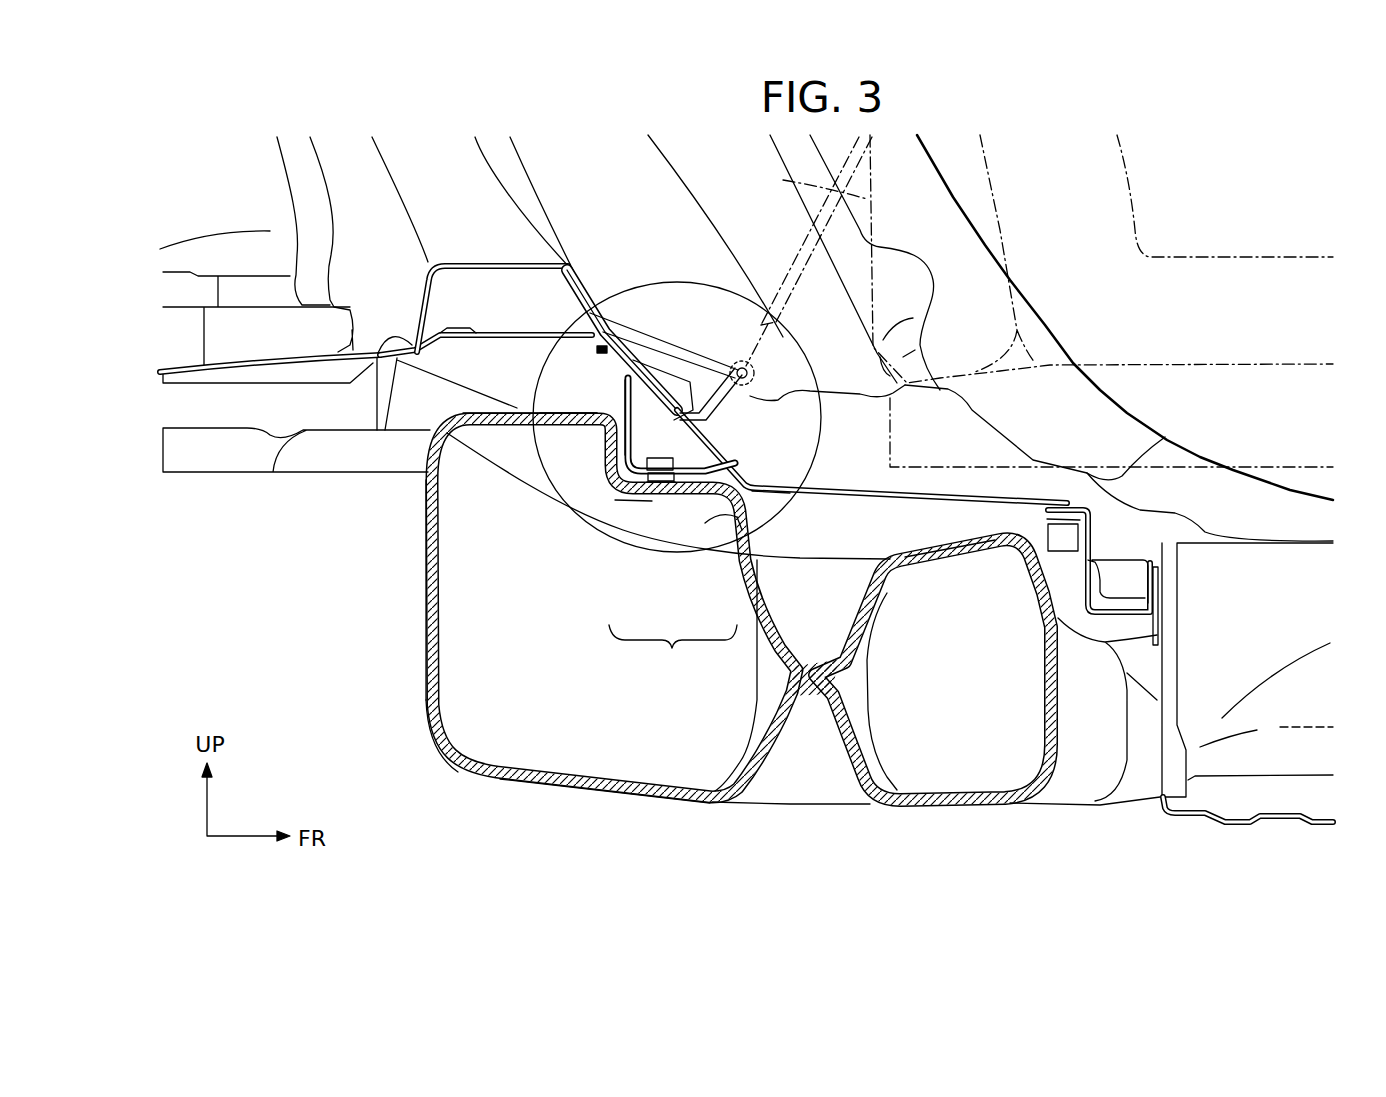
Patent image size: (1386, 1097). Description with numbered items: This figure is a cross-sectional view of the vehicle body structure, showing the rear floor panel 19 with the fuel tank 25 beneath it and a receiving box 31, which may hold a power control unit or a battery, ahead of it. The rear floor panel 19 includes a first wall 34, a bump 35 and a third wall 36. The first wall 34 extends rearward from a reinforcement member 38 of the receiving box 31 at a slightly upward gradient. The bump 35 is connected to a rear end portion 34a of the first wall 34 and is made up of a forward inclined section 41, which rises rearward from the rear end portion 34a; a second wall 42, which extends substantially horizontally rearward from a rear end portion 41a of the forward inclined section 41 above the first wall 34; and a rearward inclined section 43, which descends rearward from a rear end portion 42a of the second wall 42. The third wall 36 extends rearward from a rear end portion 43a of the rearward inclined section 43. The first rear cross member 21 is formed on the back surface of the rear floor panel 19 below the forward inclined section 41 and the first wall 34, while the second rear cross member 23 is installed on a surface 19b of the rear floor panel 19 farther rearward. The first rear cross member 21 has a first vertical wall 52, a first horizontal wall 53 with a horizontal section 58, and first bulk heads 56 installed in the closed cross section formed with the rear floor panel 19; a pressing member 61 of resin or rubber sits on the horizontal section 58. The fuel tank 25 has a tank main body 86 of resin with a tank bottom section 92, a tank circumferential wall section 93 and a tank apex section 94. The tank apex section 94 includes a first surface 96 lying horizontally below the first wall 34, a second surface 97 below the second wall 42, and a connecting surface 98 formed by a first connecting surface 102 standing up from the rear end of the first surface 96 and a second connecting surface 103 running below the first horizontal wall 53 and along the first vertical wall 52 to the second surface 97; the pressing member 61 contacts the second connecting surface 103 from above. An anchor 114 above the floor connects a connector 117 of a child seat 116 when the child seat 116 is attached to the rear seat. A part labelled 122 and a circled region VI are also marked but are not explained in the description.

The rear floor panel 19 is at (984, 484).
The surface of the rear floor panel 19b is at (1040, 498).
The first rear cross member 21 is at (600, 438).
The second rear cross member 23 is at (465, 263).
The fuel tank 25 is at (399, 606).
The receiving box 31 is at (1252, 618).
The first wall 34 is at (840, 485).
The rear end portion of the first wall 34a is at (752, 484).
The bump 35 is at (545, 321).
The third wall 36 is at (262, 353).
The reinforcement member 38 is at (1077, 500).
The forward inclined section 41 is at (697, 412).
The rear end portion of the forward inclined section 41a is at (604, 330).
The second wall 42 is at (510, 331).
The rear end portion of the second wall 42a is at (450, 328).
The rearward inclined section 43 is at (427, 347).
The rear end portion of the rearward inclined section 43a is at (373, 432).
The first vertical wall 52 is at (623, 392).
The first horizontal wall 53 is at (720, 430).
The first bulk head 56 is at (630, 452).
The horizontal section 58 is at (668, 508).
The pressing member 61 is at (617, 474).
The tank main body 86 is at (415, 656).
The tank bottom section 92 is at (612, 800).
The tank circumferential wall section 93 is at (427, 692).
The tank apex section 94 is at (555, 398).
The first surface 96 is at (924, 550).
The second surface 97 is at (498, 412).
The connecting surface 98 is at (673, 655).
The first connecting surface 102 is at (740, 505).
The second connecting surface 103 is at (657, 473).
The anchor 114 is at (719, 400).
The child seat 116 is at (1135, 197).
The connector 117 is at (787, 278).
The hood inner 122 is at (792, 181).
The section VI is at (612, 550).